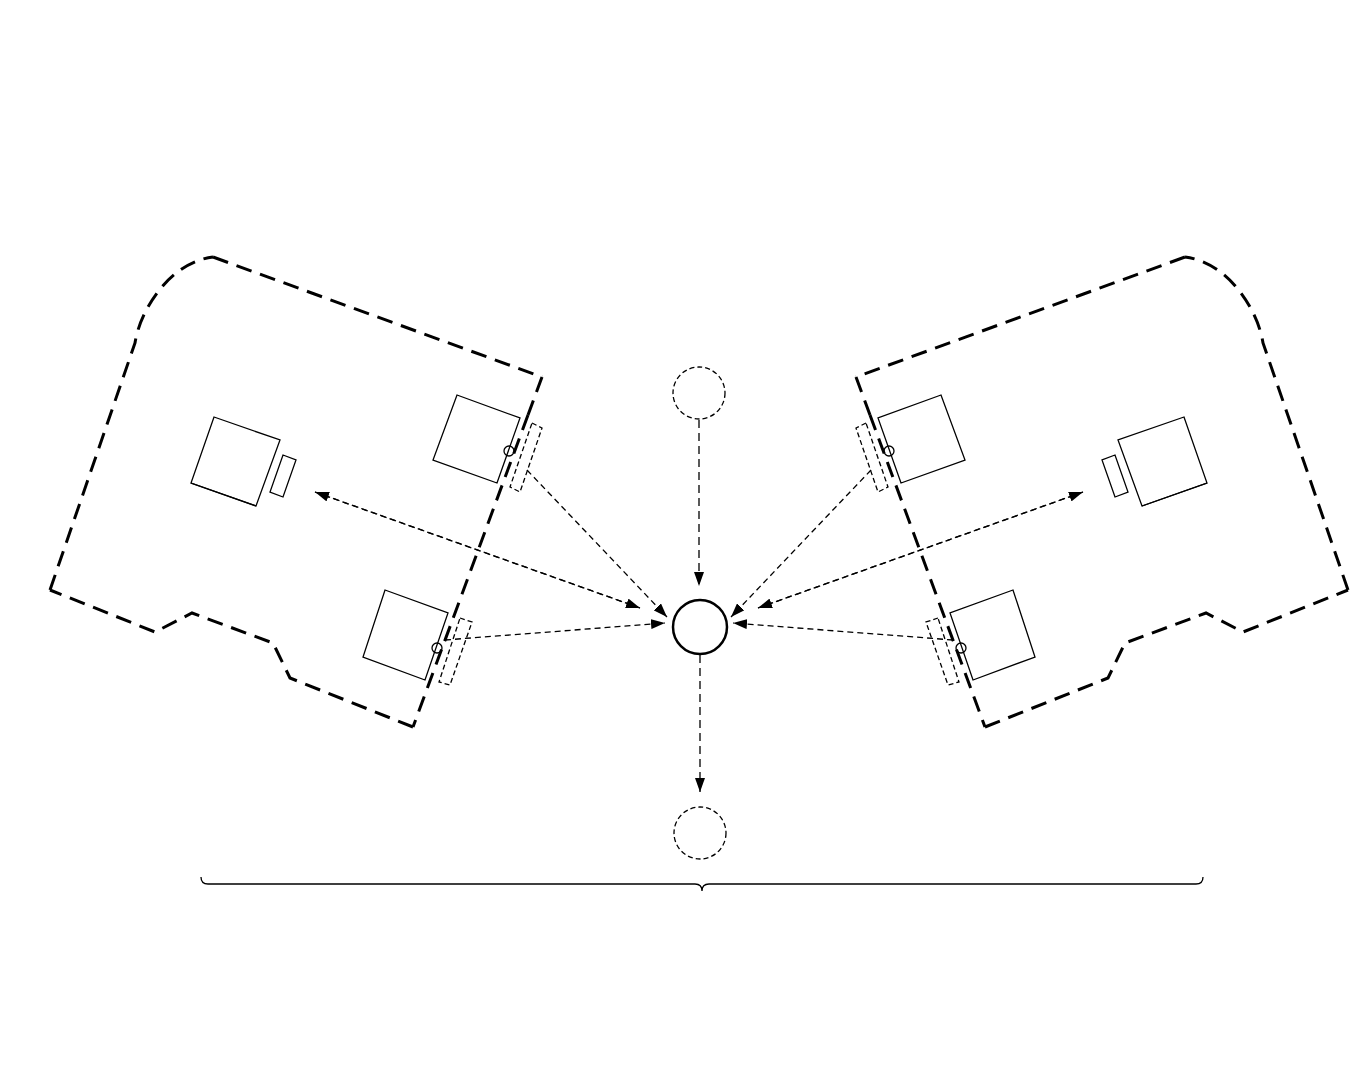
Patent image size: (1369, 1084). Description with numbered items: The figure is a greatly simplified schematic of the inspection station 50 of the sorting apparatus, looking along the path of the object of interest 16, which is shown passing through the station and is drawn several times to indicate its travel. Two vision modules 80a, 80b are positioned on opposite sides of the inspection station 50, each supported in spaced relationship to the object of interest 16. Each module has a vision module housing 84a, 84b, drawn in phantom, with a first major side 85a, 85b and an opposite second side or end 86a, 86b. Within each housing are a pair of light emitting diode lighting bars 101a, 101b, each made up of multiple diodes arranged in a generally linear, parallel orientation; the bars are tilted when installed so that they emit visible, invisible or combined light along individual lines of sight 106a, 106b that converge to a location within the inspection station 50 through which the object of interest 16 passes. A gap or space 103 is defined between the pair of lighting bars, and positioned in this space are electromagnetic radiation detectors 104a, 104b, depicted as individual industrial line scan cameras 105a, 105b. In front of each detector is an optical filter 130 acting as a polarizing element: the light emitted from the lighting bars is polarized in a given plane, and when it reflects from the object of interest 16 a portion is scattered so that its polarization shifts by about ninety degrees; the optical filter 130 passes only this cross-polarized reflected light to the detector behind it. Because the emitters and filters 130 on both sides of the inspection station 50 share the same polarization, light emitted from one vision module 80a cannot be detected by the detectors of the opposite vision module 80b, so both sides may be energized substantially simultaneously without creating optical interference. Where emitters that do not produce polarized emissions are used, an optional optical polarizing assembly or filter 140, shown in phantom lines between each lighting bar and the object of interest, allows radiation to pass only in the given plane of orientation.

The inspection station 50 is at (801, 207).
The vision module 80a is at (233, 192).
The vision module 80b is at (1172, 192).
The vision module housing 84a is at (342, 303).
The vision module housing 84b is at (1040, 305).
The first major side 85a is at (547, 380).
The first major side 85b is at (851, 380).
The second side 86a is at (137, 343).
The second side 86b is at (1263, 343).
The light emitting diode lighting bar 101a is at (485, 417).
The light emitting diode lighting bar 101b is at (893, 420).
The gap or space 103 is at (473, 592).
The electromagnetic radiation detector 104a is at (236, 455).
The electromagnetic radiation detector 104b is at (1163, 458).
The industrial line scan camera 105a is at (233, 502).
The industrial line scan camera 105b is at (1168, 505).
The line of sight 106a is at (598, 543).
The line of sight 106b is at (800, 543).
The optical filter 130 is at (294, 463).
The optical polarizing assembly 140 is at (543, 427).
The object of interest 16 is at (688, 406).